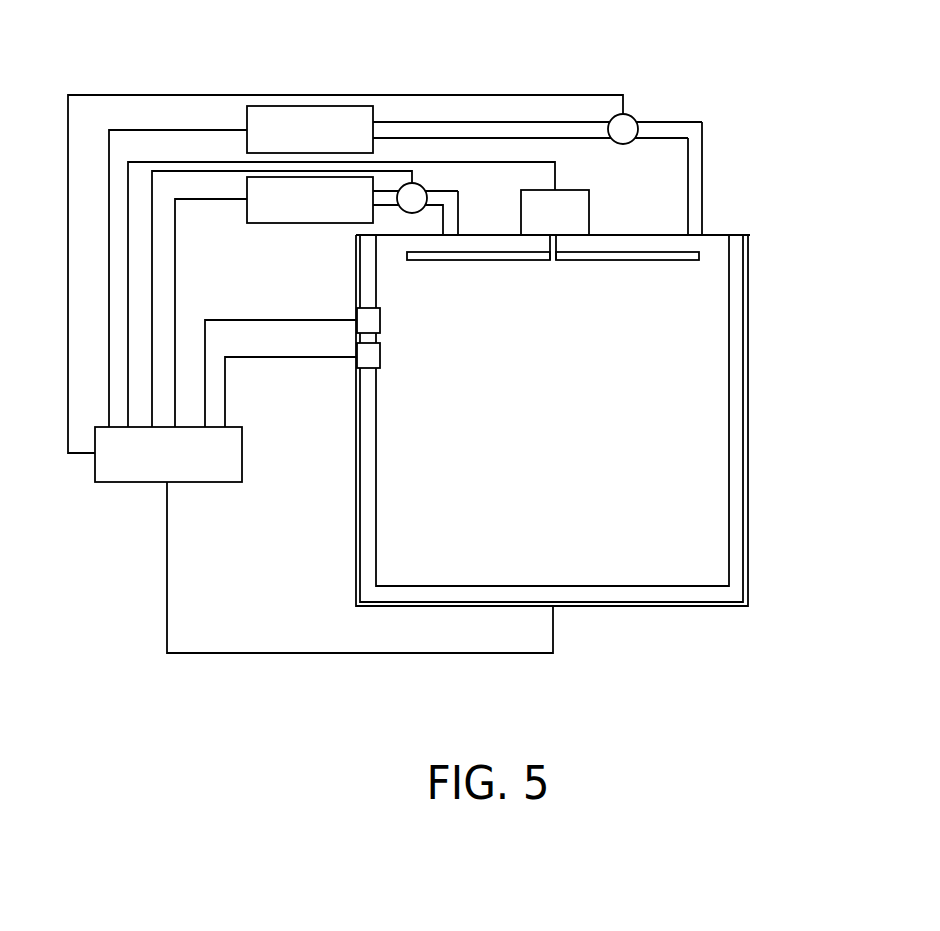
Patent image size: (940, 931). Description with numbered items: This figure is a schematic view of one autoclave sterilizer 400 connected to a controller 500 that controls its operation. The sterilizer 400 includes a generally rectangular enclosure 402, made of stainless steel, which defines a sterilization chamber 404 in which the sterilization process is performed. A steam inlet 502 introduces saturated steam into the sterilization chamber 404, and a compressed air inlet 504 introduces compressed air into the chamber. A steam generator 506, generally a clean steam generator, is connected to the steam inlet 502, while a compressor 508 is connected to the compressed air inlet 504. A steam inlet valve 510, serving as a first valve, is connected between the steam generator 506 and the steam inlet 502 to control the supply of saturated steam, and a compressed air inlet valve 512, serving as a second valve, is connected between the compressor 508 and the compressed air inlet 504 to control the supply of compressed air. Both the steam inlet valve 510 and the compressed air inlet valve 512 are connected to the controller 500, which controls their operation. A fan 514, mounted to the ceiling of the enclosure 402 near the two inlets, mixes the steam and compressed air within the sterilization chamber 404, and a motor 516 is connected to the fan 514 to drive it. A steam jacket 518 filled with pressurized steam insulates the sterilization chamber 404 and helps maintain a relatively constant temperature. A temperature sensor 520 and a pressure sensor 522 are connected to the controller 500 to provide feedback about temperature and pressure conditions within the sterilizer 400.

The autoclave sterilizer 400 is at (792, 222).
The enclosure 402 is at (750, 430).
The sterilization chamber 404 is at (674, 375).
The controller 500 is at (144, 468).
The steam inlet 502 is at (462, 234).
The compressed air inlet 504 is at (703, 234).
The steam generator 506 is at (287, 215).
The compressor 508 is at (287, 144).
The steam inlet valve 510 is at (407, 212).
The compressed air inlet valve 512 is at (633, 116).
The fan 514 is at (578, 261).
The motor 516 is at (532, 227).
The steam jacket 518 is at (657, 586).
The temperature sensor 520 is at (380, 322).
The pressure sensor 522 is at (380, 357).